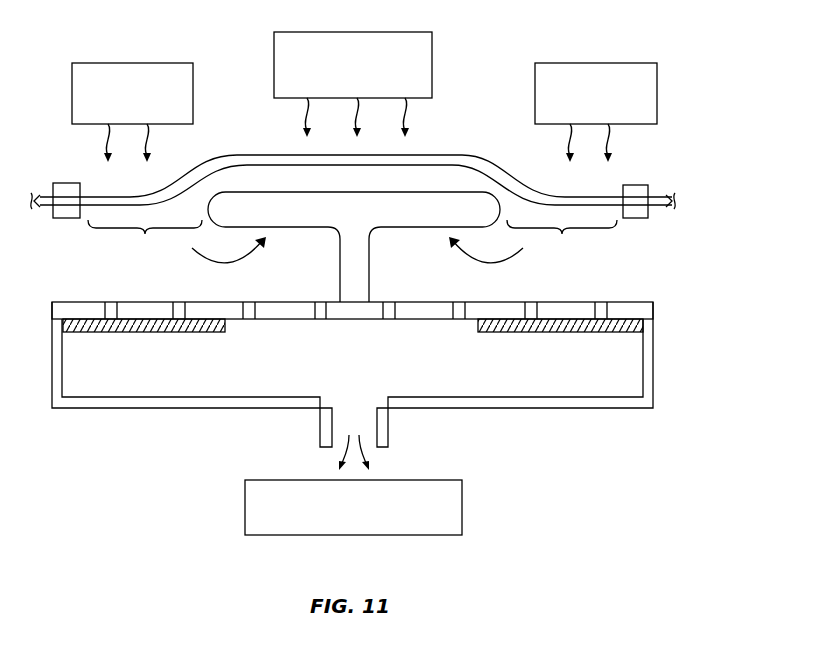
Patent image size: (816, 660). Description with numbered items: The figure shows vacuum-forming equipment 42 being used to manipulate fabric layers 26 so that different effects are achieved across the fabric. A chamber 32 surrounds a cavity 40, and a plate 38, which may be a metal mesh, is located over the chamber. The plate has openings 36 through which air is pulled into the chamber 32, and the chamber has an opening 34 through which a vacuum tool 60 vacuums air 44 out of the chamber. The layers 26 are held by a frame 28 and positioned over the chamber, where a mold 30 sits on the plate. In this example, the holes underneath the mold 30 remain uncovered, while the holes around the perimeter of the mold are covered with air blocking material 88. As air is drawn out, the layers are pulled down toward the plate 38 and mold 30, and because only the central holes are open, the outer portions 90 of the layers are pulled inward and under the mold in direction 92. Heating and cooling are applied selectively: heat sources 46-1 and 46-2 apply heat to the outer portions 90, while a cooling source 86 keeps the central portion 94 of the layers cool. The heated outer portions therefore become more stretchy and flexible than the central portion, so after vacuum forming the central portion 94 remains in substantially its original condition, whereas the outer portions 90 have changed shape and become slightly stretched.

The heat source 46-1 is at (145, 63).
The cooling source 86 is at (362, 32).
The heat source 46-2 is at (598, 63).
The central portion 94 is at (434, 141).
The layers 26 is at (462, 155).
The frame 28 is at (656, 208).
The mold 30 is at (263, 201).
The outer portions 90 is at (352, 238).
The direction 92 is at (232, 262).
The plate 38 is at (628, 302).
The air blocking material 88 is at (190, 332).
The chamber 32 is at (192, 408).
The cavity 40 is at (572, 392).
The openings 36 is at (460, 320).
The opening 34 is at (355, 396).
The air 44 is at (366, 451).
The vacuum tool 60 is at (462, 505).
The vacuum-forming equipment 42 is at (720, 182).